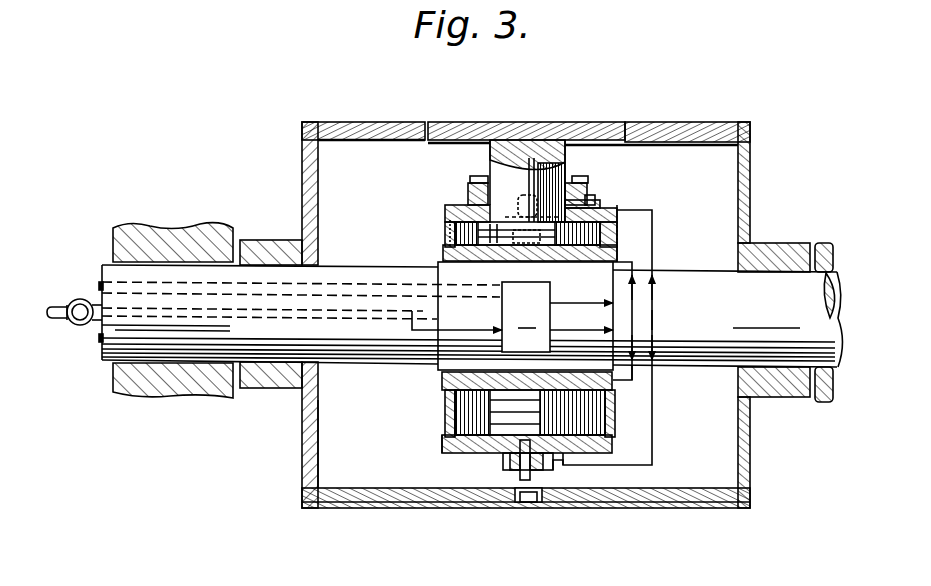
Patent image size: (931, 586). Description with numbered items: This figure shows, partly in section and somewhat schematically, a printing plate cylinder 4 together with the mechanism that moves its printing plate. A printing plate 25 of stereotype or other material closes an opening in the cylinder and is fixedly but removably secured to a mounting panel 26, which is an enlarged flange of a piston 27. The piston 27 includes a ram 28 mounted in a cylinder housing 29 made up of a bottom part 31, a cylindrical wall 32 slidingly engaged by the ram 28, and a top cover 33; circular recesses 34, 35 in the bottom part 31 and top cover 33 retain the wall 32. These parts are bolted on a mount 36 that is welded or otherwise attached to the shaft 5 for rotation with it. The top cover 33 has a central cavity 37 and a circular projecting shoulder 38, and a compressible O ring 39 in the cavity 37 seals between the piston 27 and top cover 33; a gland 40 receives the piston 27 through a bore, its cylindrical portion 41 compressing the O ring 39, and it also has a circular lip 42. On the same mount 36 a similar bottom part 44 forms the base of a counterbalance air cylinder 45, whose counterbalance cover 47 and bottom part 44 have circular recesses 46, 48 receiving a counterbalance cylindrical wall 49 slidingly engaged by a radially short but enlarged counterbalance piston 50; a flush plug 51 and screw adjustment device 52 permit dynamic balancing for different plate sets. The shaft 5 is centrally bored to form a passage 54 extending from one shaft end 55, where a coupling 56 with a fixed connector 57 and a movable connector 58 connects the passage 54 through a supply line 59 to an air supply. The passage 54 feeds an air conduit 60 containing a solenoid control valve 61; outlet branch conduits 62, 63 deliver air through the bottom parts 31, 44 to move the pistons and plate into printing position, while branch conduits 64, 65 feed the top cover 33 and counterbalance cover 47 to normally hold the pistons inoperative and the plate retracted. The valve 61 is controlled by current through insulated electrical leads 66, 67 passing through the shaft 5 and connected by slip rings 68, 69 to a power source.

The printing plate cylinder 4 is at (750, 207).
The shaft 5 is at (165, 372).
The printing plate 25 is at (585, 125).
The mounting panel 26 is at (402, 134).
The piston 27 is at (497, 130).
The ram 28 is at (452, 232).
The cylinder housing 29 is at (445, 222).
The bottom part 31 is at (441, 252).
The cylindrical wall 32 is at (618, 232).
The top cover 33 is at (447, 205).
The circular recess 34 is at (448, 236).
The circular recess 35 is at (620, 214).
The mount 36 is at (445, 352).
The central cavity 37 is at (470, 200).
The circular projecting shoulder 38 is at (594, 200).
The O ring 39 is at (567, 188).
The gland 40 is at (484, 176).
The cylindrical portion 41 is at (562, 196).
The circular lip 42 is at (590, 190).
The bottom part 44 is at (443, 383).
The counterbalance air cylinder 45 is at (343, 455).
The circular recess 46 is at (614, 385).
The counterbalance cover 47 is at (443, 452).
The circular recess 48 is at (614, 445).
The counterbalance cylindrical wall 49 is at (610, 413).
The counterbalance piston 50 is at (566, 456).
The flush plug 51 is at (503, 458).
The screw adjustment device 52 is at (531, 480).
The passage 54 is at (183, 316).
The shaft end 55 is at (137, 354).
The coupling 56 is at (85, 273).
The fixed connector 57 is at (83, 324).
The movable connector 58 is at (67, 305).
The supply line 59 is at (62, 322).
The air conduit 60 is at (493, 328).
The solenoid control valve 61 is at (557, 317).
The outlet branch conduit 62 is at (633, 260).
The outlet branch conduit 63 is at (620, 377).
The branch conduit 64 is at (657, 322).
The branch conduit 65 is at (652, 300).
The insulated electrical lead 66 is at (200, 280).
The insulated electrical lead 67 is at (153, 293).
The slip ring 68 is at (112, 285).
The slip ring 69 is at (101, 275).